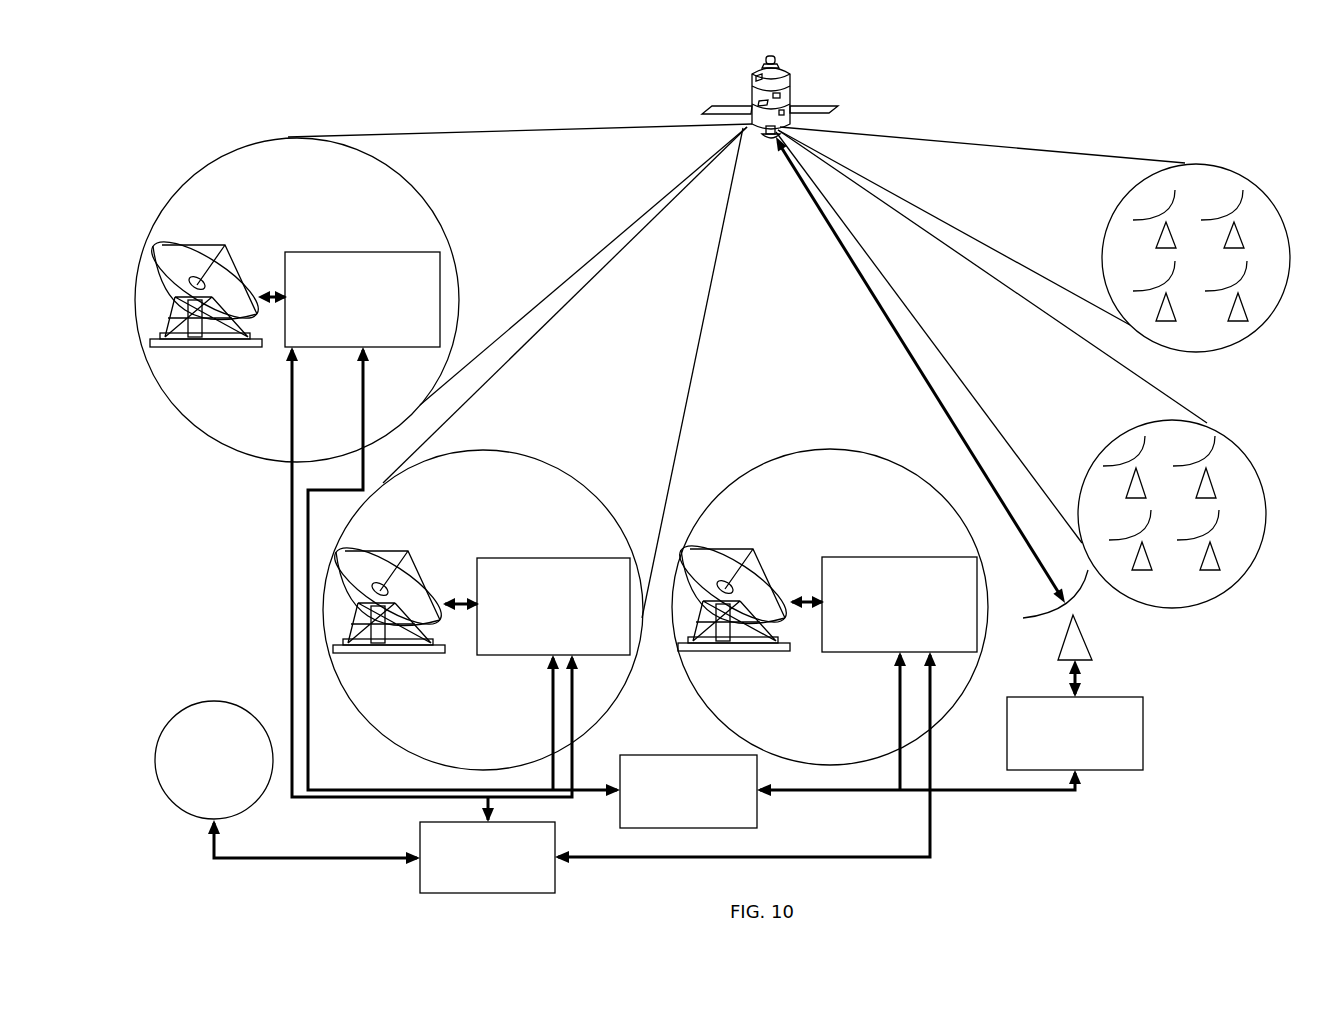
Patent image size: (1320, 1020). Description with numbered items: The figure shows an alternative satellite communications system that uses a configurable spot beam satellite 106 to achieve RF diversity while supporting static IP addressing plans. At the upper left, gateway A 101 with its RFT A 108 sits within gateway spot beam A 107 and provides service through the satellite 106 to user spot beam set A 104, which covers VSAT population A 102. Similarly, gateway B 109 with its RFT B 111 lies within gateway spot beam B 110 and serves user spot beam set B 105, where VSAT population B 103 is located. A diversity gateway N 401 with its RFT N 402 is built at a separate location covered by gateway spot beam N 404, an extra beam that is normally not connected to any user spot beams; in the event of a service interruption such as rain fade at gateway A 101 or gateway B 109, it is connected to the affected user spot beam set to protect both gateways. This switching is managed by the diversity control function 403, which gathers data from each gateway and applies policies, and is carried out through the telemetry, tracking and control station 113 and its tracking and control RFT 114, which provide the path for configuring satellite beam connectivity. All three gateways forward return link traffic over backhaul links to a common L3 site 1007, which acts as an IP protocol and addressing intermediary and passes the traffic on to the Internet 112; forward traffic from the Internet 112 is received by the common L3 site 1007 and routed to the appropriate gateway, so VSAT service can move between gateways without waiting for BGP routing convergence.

The satellite 106 is at (752, 73).
The gateway A 101 is at (350, 250).
The RFT A 108 is at (227, 242).
The gateway spot beam A 107 is at (198, 430).
The gateway B 109 is at (587, 557).
The RFT B 111 is at (375, 552).
The gateway spot beam B 110 is at (577, 737).
The gateway N 401 is at (933, 555).
The RFT N 402 is at (735, 553).
The gateway spot beam N 404 is at (940, 720).
The user spot beam set A 104 is at (1255, 180).
The VSAT population A 102 is at (1236, 325).
The user spot beam set B 105 is at (1238, 445).
The VSAT population B 103 is at (1204, 574).
The tracking and control RFT 114 is at (1072, 622).
The telemetry, tracking and control station 113 is at (1117, 772).
The Internet 112 is at (183, 707).
The diversity control function 403 is at (635, 755).
The common L3 site 1007 is at (557, 868).